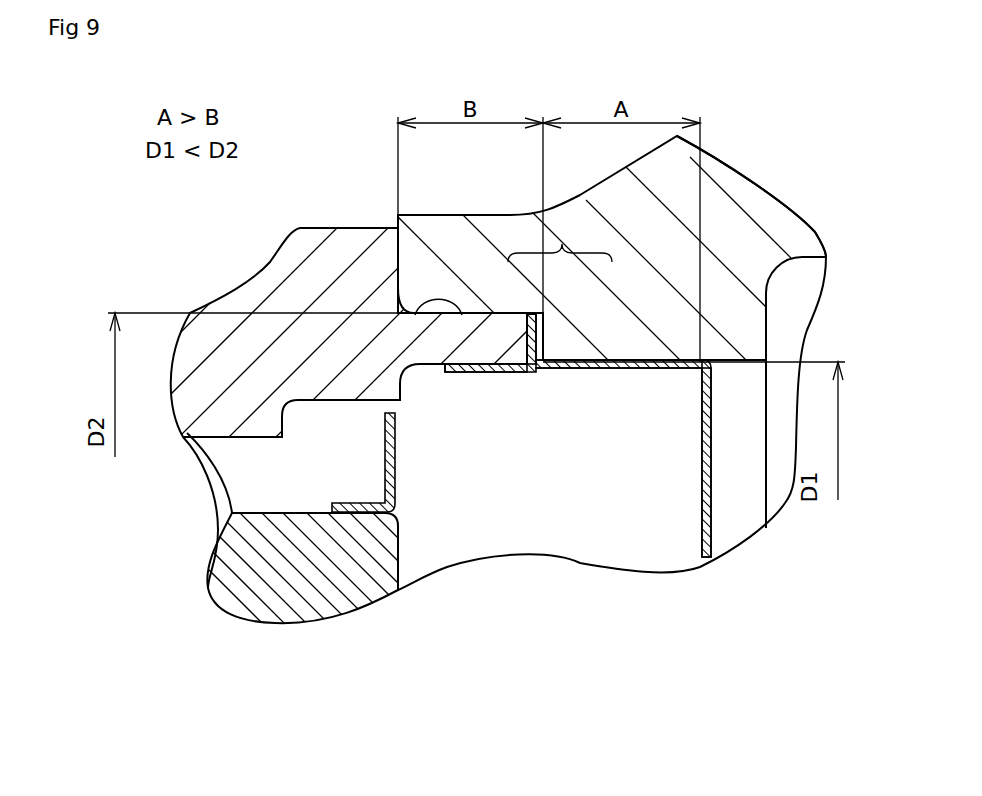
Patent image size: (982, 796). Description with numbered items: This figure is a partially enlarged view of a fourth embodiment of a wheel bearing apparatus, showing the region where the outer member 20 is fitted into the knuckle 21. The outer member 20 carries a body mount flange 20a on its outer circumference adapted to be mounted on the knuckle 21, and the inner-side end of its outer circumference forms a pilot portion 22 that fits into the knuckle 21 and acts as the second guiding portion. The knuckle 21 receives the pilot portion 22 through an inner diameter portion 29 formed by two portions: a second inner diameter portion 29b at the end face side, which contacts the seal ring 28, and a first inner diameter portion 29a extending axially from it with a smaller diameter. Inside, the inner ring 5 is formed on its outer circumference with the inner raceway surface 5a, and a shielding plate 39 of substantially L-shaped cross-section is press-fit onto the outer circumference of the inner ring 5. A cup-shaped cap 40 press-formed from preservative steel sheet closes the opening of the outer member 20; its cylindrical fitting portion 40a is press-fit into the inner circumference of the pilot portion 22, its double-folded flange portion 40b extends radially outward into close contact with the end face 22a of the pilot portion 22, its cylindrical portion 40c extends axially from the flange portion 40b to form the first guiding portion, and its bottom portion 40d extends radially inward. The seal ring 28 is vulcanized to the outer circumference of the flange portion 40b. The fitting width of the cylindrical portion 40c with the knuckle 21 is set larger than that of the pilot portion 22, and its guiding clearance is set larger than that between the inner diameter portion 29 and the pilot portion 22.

The inner ring 5 is at (313, 597).
The inner raceway surface 5a is at (212, 533).
The outer member 20 is at (273, 285).
The body mount flange 20a is at (336, 243).
The knuckle 21 is at (750, 200).
The pilot portion 22 is at (418, 312).
The end face 22a is at (523, 348).
The seal ring 28 is at (541, 314).
The inner diameter portion 29 is at (590, 268).
The first inner diameter portion 29a is at (604, 376).
The second inner diameter portion 29b is at (513, 311).
The shielding plate 39 is at (387, 450).
The cap 40 is at (507, 472).
The cylindrical fitting portion 40a is at (480, 377).
The flange portion 40b is at (537, 377).
The cylindrical portion 40c is at (575, 373).
The bottom portion 40d is at (700, 387).